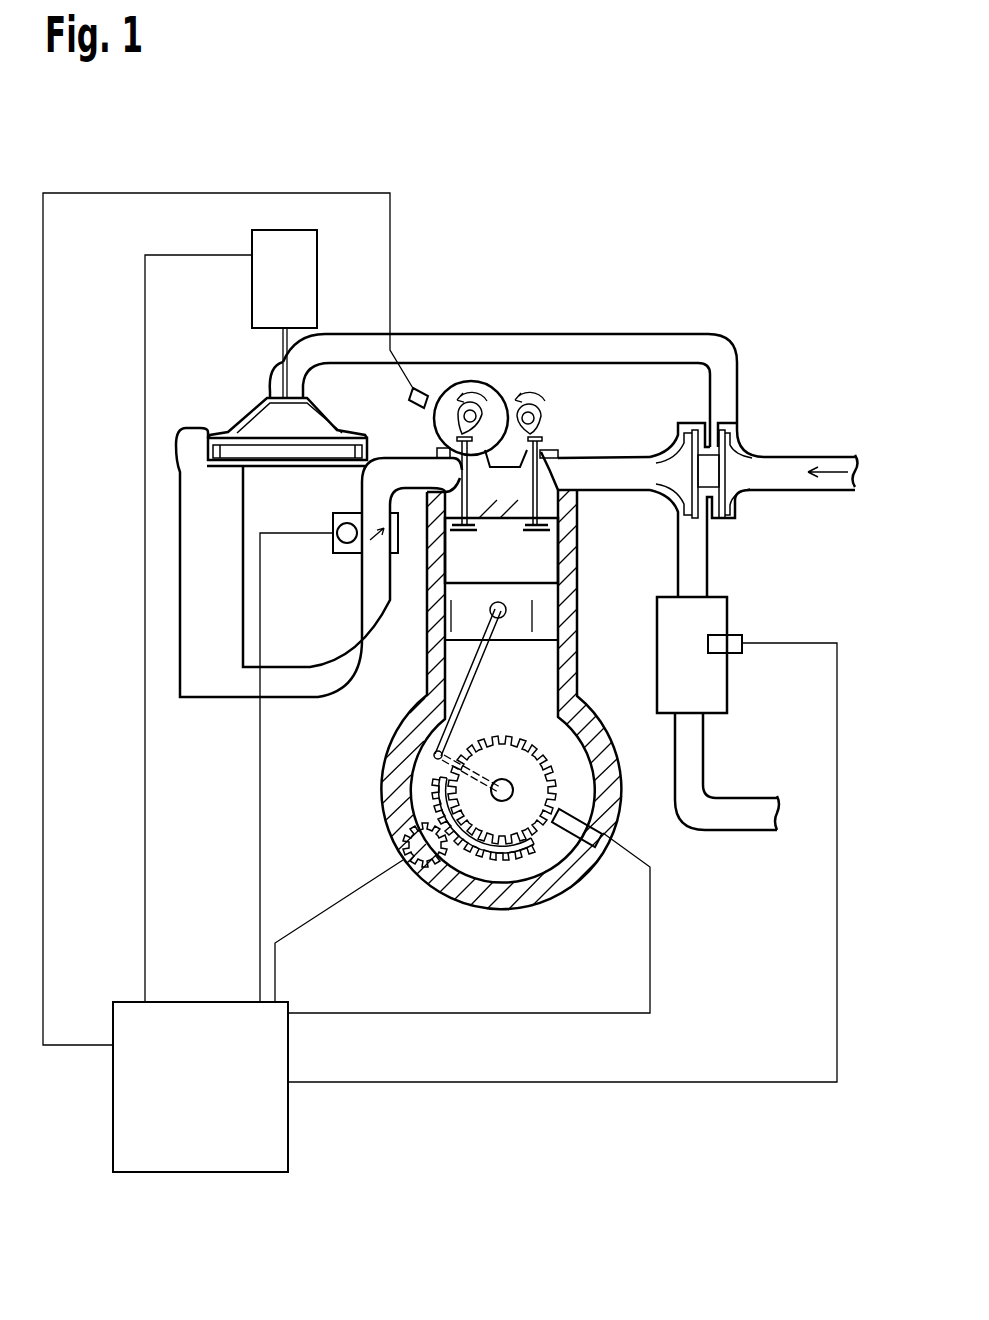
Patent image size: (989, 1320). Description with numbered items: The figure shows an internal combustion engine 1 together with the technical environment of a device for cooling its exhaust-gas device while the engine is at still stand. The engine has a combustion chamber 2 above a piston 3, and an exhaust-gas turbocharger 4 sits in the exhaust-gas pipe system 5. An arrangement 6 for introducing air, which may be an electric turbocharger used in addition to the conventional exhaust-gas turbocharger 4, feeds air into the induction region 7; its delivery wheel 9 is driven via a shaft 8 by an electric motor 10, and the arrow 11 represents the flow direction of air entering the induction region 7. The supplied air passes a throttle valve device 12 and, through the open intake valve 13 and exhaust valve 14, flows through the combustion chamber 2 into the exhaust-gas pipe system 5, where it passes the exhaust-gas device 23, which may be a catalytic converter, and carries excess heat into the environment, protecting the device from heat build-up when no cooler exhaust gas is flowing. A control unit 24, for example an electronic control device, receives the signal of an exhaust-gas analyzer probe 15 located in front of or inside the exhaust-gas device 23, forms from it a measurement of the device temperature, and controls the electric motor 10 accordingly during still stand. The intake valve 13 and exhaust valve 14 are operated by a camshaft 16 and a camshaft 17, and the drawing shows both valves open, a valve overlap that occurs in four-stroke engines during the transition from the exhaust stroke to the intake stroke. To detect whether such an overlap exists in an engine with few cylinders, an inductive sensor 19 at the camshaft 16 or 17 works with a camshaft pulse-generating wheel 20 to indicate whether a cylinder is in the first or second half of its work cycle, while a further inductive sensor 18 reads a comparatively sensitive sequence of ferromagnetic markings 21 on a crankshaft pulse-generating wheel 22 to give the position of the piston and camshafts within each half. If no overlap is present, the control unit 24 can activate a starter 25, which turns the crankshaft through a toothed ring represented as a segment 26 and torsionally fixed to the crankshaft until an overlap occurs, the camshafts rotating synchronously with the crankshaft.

The internal combustion engine 1 is at (392, 714).
The combustion chamber 2 is at (560, 546).
The piston 3 is at (542, 627).
The exhaust-gas turbocharger 4 is at (755, 433).
The exhaust-gas pipe system 5 is at (748, 560).
The arrangement for introducing air 6 is at (335, 292).
The induction region 7 is at (630, 334).
The shaft 8 is at (275, 390).
The delivery wheel 9 is at (240, 420).
The electric motor 10 is at (252, 278).
The arrow representing air flow direction 11 is at (842, 482).
The throttle valve device 12 is at (334, 515).
The intake valve 13 is at (452, 480).
The exhaust valve 14 is at (548, 482).
The exhaust-gas analyzer probe 15 is at (738, 653).
The camshaft 16 is at (468, 381).
The camshaft 17 is at (545, 410).
The inductive sensor 18 is at (577, 850).
The inductive sensor 19 is at (425, 388).
The camshaft pulse-generating wheel 20 is at (505, 400).
The ferromagnetic markings 21 is at (560, 692).
The crankshaft pulse-generating wheel 22 is at (513, 791).
The exhaust-gas device 23 is at (727, 702).
The control unit 24 is at (205, 1175).
The starter 25 is at (423, 870).
The toothed ring segment 26 is at (485, 867).